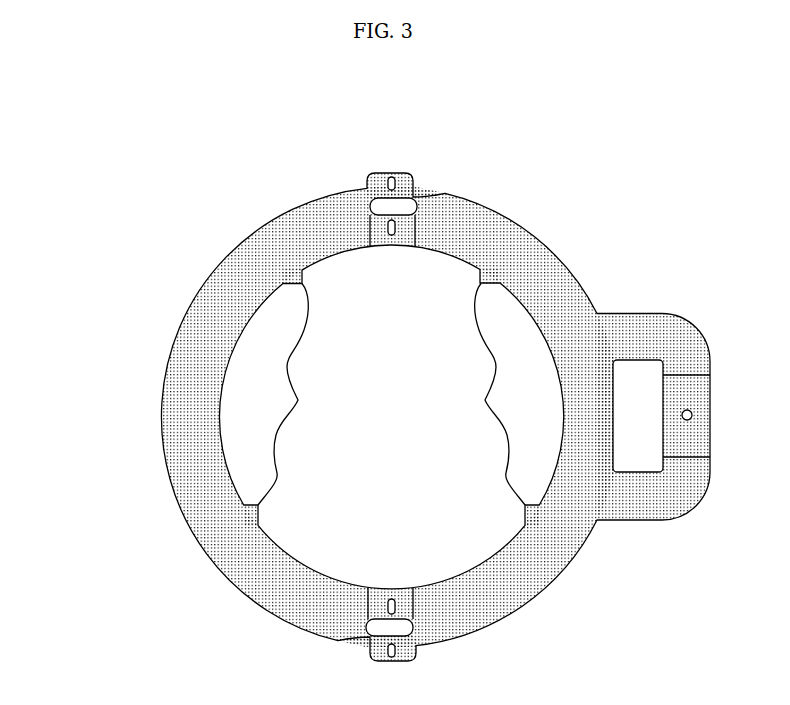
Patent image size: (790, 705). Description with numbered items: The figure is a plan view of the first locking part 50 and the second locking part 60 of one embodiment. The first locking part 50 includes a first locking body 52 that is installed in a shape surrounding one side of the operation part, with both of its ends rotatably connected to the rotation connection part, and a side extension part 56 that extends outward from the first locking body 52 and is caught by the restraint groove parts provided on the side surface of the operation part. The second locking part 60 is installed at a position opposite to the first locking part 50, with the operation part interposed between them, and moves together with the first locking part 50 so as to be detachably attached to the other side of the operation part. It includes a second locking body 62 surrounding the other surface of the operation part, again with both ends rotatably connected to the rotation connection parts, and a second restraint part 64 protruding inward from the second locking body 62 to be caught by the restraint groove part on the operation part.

The first locking part 50 is at (384, 396).
The first locking body 52 is at (523, 277).
The side extension part 56 is at (682, 332).
The second locking part 60 is at (143, 289).
The second locking body 62 is at (248, 270).
The second restraint part 64 is at (298, 400).